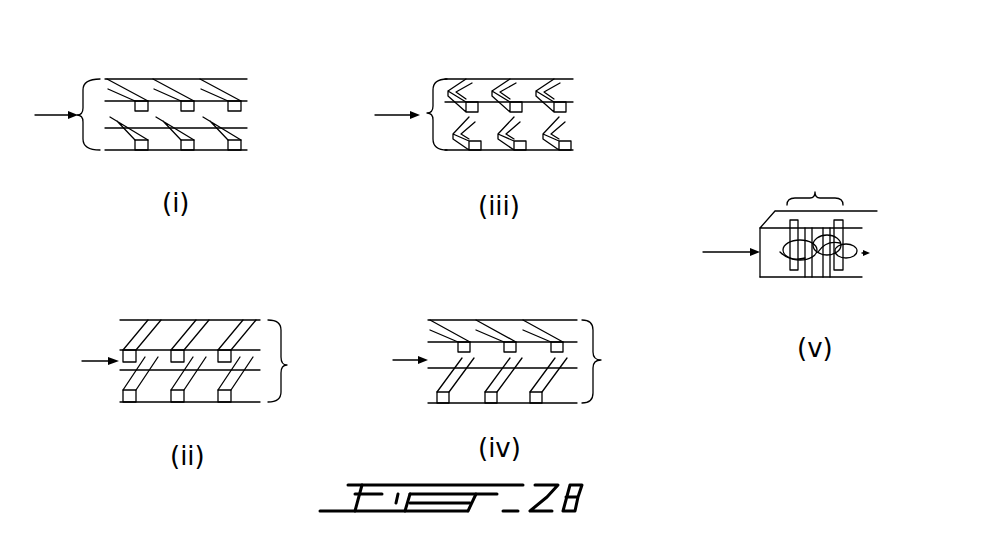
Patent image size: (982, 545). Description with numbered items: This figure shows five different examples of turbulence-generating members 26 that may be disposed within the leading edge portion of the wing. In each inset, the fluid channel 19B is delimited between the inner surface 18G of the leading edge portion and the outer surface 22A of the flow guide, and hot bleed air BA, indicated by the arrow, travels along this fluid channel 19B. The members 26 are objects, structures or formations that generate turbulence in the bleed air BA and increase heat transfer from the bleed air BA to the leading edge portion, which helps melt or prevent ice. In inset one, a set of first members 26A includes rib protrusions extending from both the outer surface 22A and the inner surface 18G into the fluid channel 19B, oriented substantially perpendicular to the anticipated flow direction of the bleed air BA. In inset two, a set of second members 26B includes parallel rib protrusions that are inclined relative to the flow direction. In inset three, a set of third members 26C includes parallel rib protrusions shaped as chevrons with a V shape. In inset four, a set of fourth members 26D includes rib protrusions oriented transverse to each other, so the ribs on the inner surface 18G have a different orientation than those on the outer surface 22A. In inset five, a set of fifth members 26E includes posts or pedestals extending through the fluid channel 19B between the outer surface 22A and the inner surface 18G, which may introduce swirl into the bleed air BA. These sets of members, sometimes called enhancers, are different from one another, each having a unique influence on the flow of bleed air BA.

The inner surface of the leading edge portion 18G is at (247, 79).
The outer surface of the flow guide 22A is at (247, 128).
The fluid channel 19B is at (200, 140).
The turbulence-generating members 26 is at (205, 88).
The first members 26A is at (77, 117).
The second members 26B is at (299, 361).
The third members 26C is at (427, 115).
The fourth members 26D is at (614, 361).
The fifth members 26E is at (815, 187).
The bleed air BA is at (51, 108).